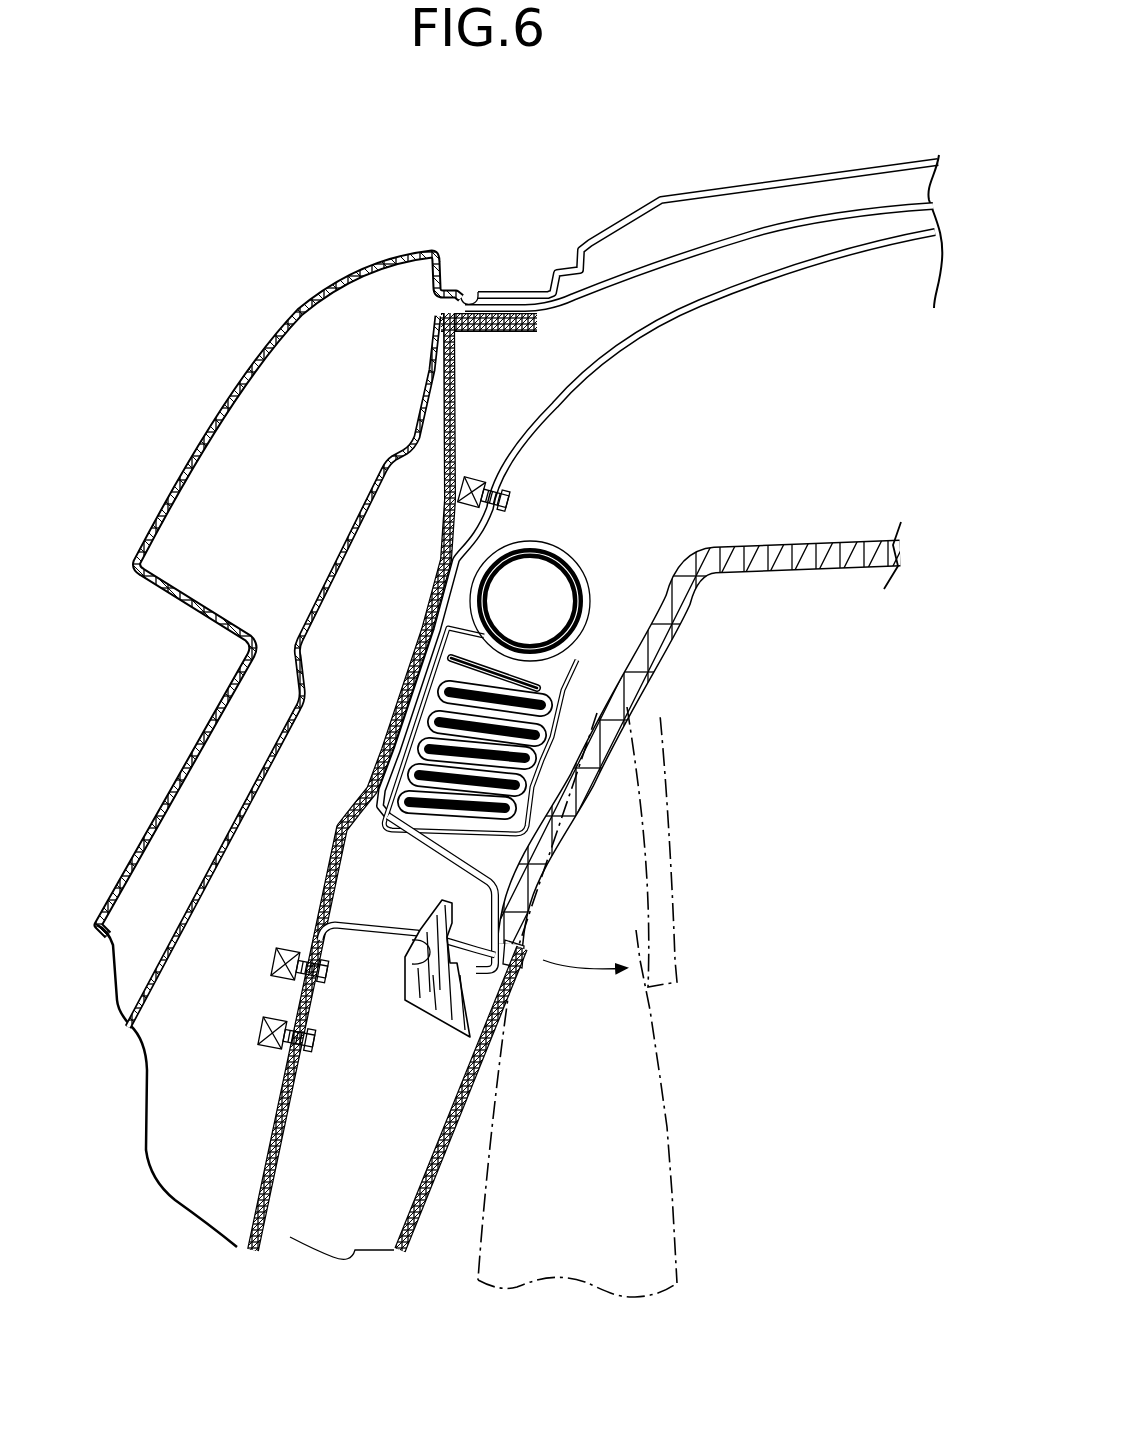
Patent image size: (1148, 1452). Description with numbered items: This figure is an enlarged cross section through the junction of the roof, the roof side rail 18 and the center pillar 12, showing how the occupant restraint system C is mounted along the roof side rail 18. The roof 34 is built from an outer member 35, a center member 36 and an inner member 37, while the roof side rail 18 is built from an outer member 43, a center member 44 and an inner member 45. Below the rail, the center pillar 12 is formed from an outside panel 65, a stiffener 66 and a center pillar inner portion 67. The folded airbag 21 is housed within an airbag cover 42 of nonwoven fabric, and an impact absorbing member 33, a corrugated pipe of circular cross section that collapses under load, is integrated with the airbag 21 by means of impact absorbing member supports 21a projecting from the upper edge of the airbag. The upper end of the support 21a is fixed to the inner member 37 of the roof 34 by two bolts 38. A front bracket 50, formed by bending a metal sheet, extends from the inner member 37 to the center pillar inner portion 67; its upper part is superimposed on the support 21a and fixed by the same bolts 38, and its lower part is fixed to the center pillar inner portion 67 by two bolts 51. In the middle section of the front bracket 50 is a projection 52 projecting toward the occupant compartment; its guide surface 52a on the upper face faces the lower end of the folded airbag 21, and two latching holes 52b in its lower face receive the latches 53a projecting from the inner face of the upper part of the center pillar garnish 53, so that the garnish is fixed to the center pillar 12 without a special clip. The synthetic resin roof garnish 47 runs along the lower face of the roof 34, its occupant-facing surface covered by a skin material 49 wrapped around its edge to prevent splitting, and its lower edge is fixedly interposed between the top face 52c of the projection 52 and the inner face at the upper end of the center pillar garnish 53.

The center pillar 12 is at (176, 776).
The roof side rail 18 is at (286, 698).
The airbag 21 is at (674, 1213).
The impact absorbing member support 21a is at (516, 665).
The impact absorbing member 33 is at (495, 577).
The roof 34 is at (829, 160).
The outer member 35 is at (733, 189).
The center member 36 is at (690, 256).
The inner member 37 is at (814, 256).
The bolt 38 is at (520, 500).
The airbag cover 42 is at (541, 856).
The outer member 43 is at (277, 352).
The center member 44 is at (340, 553).
The inner member 45 is at (420, 643).
The roof garnish 47 is at (797, 567).
The skin material 49 is at (543, 897).
The front bracket 50 is at (299, 1074).
The bolt 51 is at (307, 1042).
The projection 52 is at (429, 919).
The guide surface 52a is at (447, 853).
The latching hole 52b is at (425, 940).
The top face 52c is at (523, 947).
The center pillar garnish 53 is at (419, 1226).
The latch 53a is at (433, 993).
The outside panel 65 is at (130, 857).
The stiffener 66 is at (190, 903).
The center pillar inner portion 67 is at (267, 1140).
The occupant restraint system C is at (616, 558).